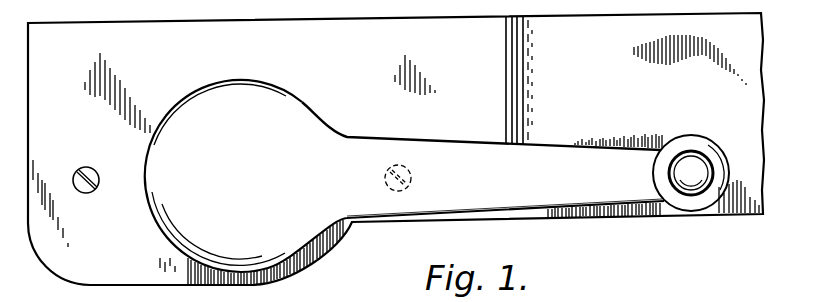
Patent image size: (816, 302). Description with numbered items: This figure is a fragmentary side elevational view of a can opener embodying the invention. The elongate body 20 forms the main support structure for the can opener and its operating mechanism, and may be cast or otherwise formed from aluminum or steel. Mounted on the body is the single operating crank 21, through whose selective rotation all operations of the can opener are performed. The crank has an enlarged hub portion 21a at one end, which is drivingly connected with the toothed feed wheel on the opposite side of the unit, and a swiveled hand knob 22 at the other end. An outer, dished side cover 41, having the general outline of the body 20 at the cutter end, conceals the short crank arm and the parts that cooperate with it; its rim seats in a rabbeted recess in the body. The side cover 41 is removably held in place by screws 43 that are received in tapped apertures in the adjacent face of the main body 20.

The elongate body 20 is at (528, 12).
The operating crank 21 is at (445, 138).
The enlarged hub portion 21a is at (302, 103).
The swiveled hand knob 22 is at (690, 136).
The side cover 41 is at (490, 76).
The screws 43 is at (93, 168).